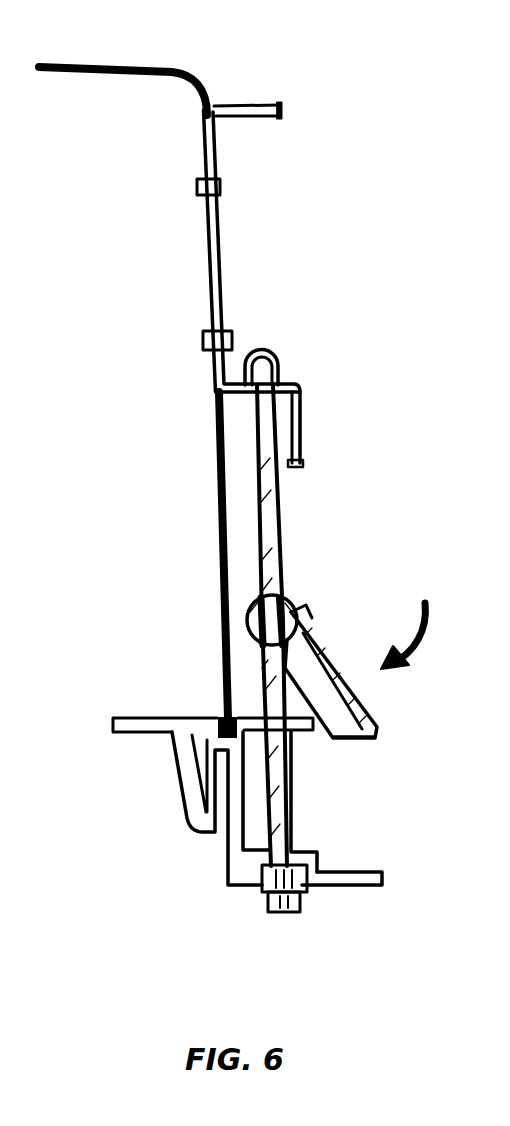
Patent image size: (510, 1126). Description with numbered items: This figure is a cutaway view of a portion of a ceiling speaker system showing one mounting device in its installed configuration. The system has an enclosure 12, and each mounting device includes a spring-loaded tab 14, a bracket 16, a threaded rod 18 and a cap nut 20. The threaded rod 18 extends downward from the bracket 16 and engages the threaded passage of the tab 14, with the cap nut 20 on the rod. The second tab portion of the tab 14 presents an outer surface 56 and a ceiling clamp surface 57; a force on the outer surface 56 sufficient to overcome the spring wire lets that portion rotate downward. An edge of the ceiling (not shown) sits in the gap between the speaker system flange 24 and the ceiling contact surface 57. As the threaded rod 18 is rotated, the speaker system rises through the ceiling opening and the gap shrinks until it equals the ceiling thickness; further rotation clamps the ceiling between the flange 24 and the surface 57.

The enclosure 12 is at (80, 62).
The spring-loaded tab 14 is at (410, 620).
The bracket 16 is at (210, 255).
The threaded rod 18 is at (277, 541).
The cap nut 20 is at (293, 613).
The speaker system flange 24 is at (368, 872).
The outer surface 56 is at (365, 708).
The ceiling clamp surface 57 is at (352, 742).